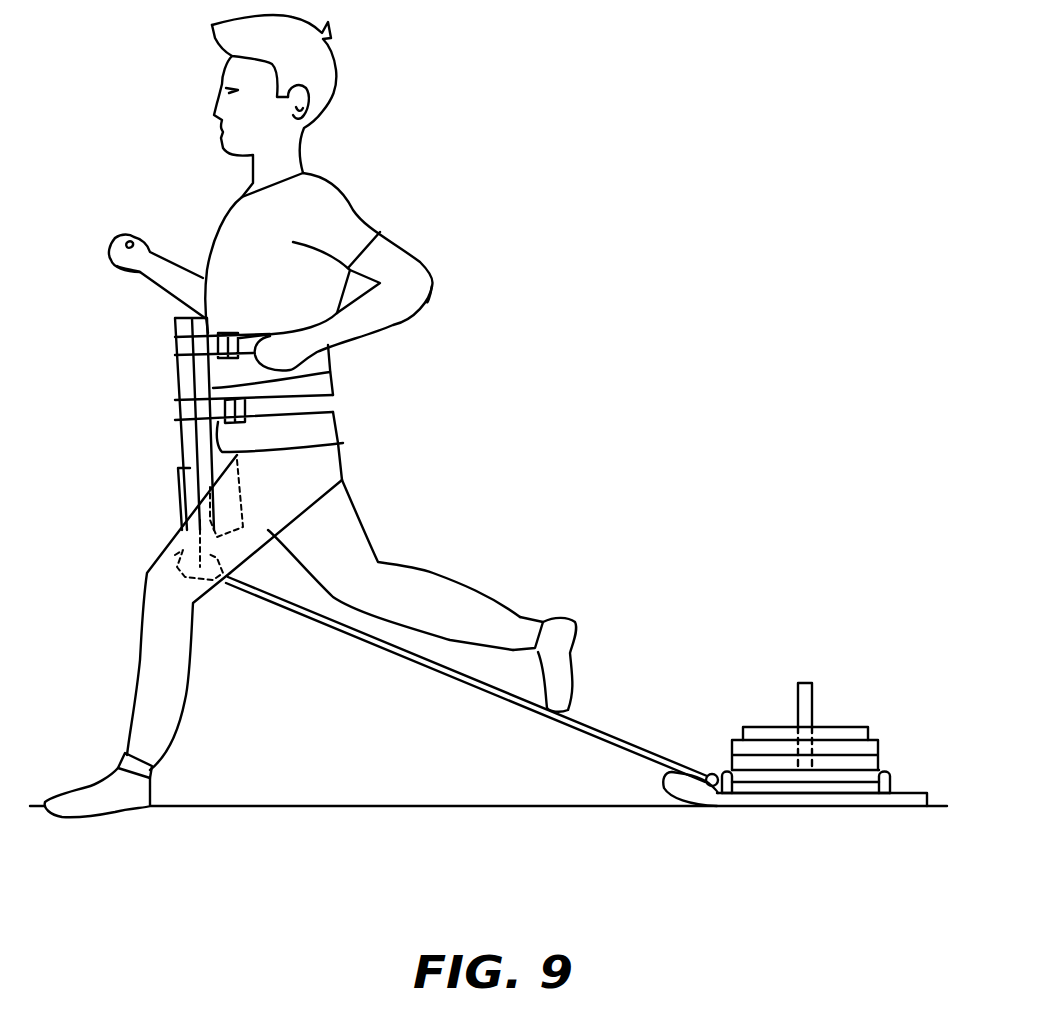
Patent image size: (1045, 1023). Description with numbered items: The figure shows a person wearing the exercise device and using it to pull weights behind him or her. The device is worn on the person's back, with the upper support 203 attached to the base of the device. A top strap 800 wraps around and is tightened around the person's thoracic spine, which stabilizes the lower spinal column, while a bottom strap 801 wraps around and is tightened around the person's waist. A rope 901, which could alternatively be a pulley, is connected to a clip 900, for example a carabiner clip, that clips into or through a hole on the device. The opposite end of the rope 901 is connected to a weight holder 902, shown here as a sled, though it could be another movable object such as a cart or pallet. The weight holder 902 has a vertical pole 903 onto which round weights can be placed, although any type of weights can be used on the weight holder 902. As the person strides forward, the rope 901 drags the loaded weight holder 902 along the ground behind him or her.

The upper support 203 is at (330, 372).
The top strap 800 is at (180, 349).
The bottom strap 801 is at (187, 420).
The clip 900 is at (183, 587).
The rope 901 is at (370, 650).
The weight holder 902 is at (910, 797).
The vertical pole 903 is at (726, 723).